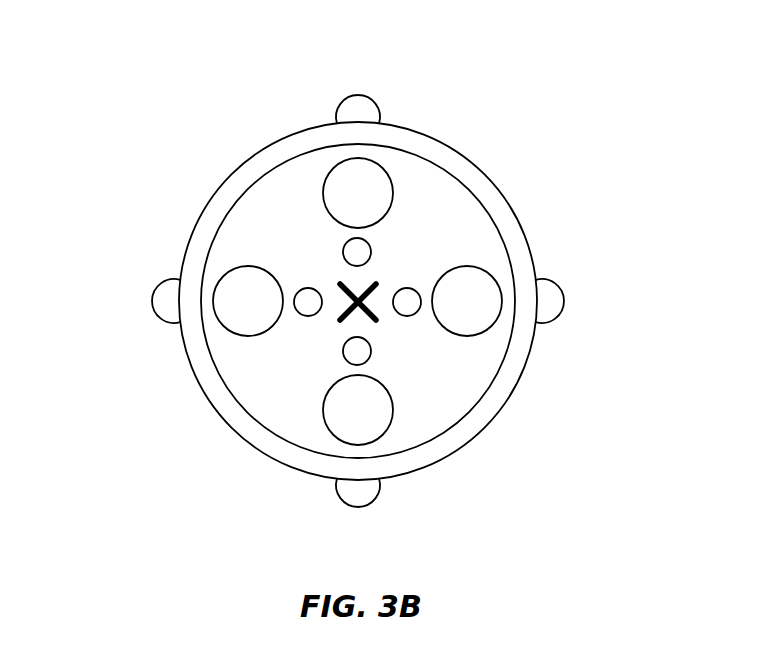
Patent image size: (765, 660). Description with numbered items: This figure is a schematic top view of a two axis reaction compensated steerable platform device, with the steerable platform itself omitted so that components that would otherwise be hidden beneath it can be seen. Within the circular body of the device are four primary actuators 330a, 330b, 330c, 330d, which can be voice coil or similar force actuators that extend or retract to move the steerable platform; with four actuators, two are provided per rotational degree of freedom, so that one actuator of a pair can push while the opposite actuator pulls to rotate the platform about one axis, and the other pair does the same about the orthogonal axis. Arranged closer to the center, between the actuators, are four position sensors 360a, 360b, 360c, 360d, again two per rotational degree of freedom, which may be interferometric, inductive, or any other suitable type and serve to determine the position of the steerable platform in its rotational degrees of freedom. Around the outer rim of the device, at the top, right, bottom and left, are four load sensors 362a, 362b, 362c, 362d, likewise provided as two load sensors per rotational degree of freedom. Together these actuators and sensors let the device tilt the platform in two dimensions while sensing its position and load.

The primary actuator 330a is at (383, 167).
The primary actuator 330b is at (492, 326).
The primary actuator 330c is at (333, 435).
The primary actuator 330d is at (223, 277).
The position sensor 360a is at (372, 250).
The position sensor 360b is at (408, 316).
The position sensor 360c is at (343, 352).
The position sensor 360d is at (308, 288).
The load sensor 362a is at (355, 95).
The load sensor 362b is at (564, 301).
The load sensor 362c is at (358, 507).
The load sensor 362d is at (151, 302).